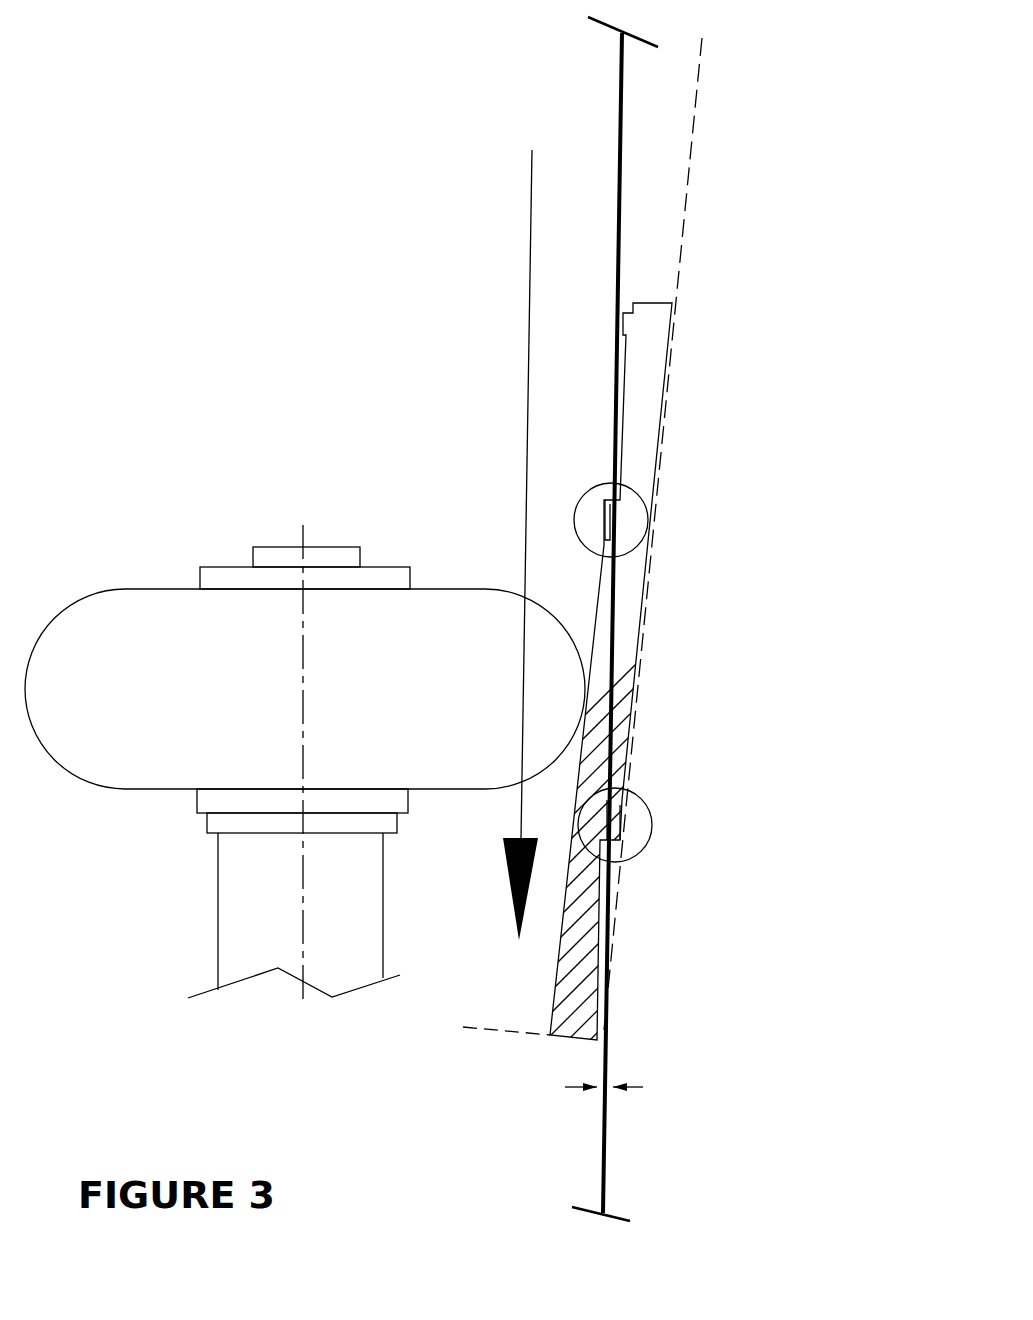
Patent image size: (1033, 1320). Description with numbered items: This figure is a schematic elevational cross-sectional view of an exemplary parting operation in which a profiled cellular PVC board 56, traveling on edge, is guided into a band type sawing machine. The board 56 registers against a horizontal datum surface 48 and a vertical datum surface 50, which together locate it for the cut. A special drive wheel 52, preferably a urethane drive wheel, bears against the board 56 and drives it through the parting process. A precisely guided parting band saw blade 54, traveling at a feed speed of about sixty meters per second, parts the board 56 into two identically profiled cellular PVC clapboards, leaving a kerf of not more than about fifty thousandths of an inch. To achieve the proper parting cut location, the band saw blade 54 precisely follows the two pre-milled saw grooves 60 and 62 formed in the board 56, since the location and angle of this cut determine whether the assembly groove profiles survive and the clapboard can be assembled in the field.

The horizontal datum surface 48 is at (588, 1065).
The vertical datum surface 50 is at (681, 534).
The drive wheel 52 is at (305, 765).
The parting band saw blade 54 is at (621, 121).
The board 56 is at (657, 358).
The pre-milled saw groove 60 is at (585, 497).
The pre-milled saw groove 62 is at (640, 799).